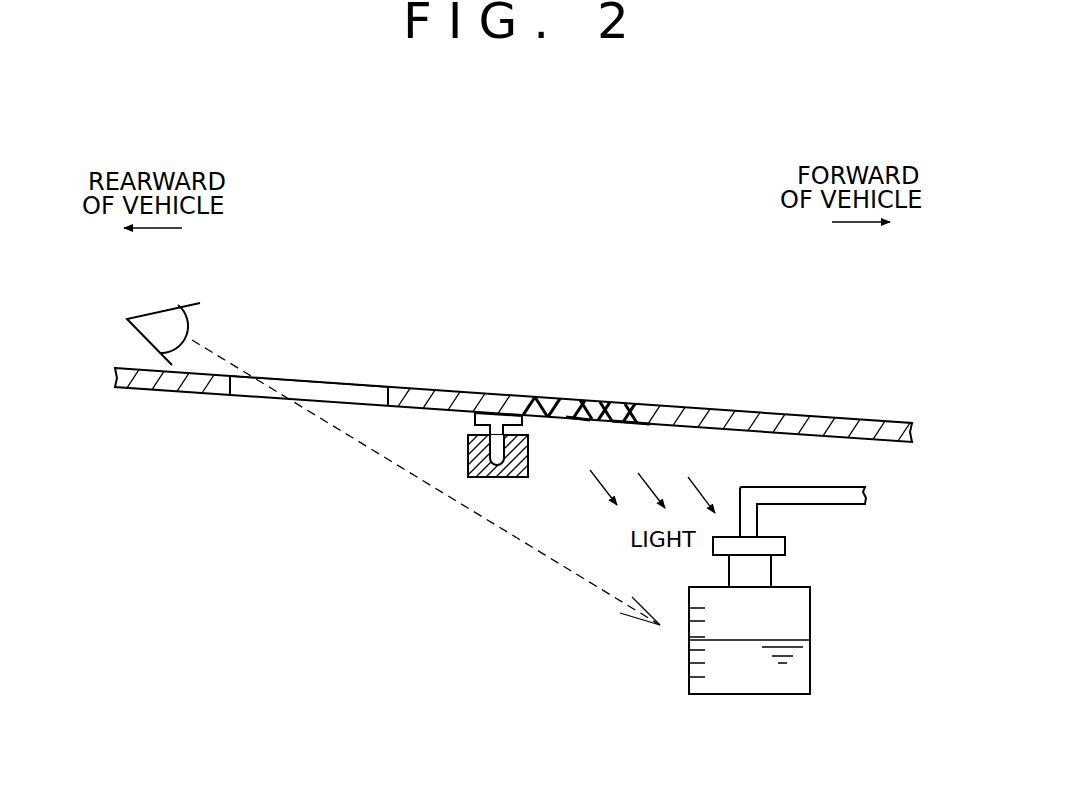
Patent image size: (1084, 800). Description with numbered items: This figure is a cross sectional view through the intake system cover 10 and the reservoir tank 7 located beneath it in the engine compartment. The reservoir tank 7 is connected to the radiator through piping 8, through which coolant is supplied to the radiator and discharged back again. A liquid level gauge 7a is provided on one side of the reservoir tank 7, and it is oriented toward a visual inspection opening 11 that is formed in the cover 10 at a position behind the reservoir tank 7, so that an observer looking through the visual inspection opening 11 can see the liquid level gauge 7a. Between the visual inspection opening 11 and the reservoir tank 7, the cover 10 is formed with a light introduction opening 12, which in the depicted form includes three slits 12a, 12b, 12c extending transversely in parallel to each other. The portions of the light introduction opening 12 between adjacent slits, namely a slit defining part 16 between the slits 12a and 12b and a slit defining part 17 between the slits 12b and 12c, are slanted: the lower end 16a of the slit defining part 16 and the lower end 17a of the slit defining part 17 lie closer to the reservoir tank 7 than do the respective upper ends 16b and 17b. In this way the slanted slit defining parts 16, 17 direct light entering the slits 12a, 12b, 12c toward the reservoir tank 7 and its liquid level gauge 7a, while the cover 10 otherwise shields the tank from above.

The reservoir tank 7 is at (810, 617).
The liquid level gauge 7a is at (692, 644).
The piping 8 is at (840, 505).
The intake system cover 10 is at (841, 416).
The visual inspection opening 11 is at (388, 396).
The light introduction opening 12 is at (584, 304).
The slit 12a is at (539, 398).
The slit 12b is at (588, 407).
The slit 12c is at (637, 404).
The slit defining part 16 is at (573, 421).
The lower end 16a is at (587, 421).
The upper end 16b is at (566, 398).
The slit defining part 17 is at (620, 423).
The lower end 17a is at (640, 424).
The upper end 17b is at (613, 404).